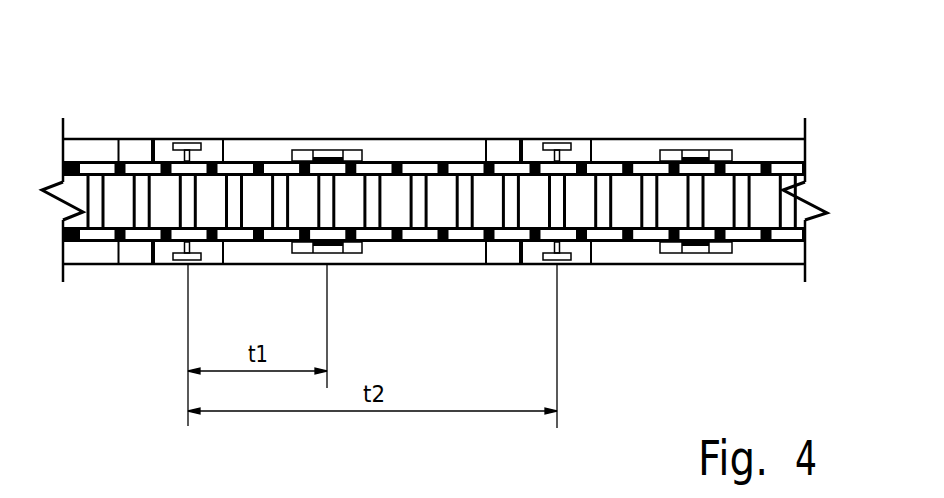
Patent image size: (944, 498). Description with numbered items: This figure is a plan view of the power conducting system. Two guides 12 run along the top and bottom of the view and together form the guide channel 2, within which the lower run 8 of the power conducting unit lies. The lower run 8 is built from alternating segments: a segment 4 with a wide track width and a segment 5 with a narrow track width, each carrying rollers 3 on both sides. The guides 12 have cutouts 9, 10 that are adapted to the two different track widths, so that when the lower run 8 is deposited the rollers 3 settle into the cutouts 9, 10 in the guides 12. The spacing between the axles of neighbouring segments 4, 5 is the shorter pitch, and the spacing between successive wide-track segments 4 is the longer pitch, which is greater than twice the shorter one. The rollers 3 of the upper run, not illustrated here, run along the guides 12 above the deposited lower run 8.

The guide channel 2 is at (811, 248).
The rollers 3 is at (185, 262).
The segment with wide track width 4 is at (197, 237).
The segment with narrow track width 5 is at (335, 236).
The lower run 8 is at (558, 200).
The cutout 9 is at (165, 150).
The cutout 10 is at (355, 155).
The guides 12 is at (268, 149).